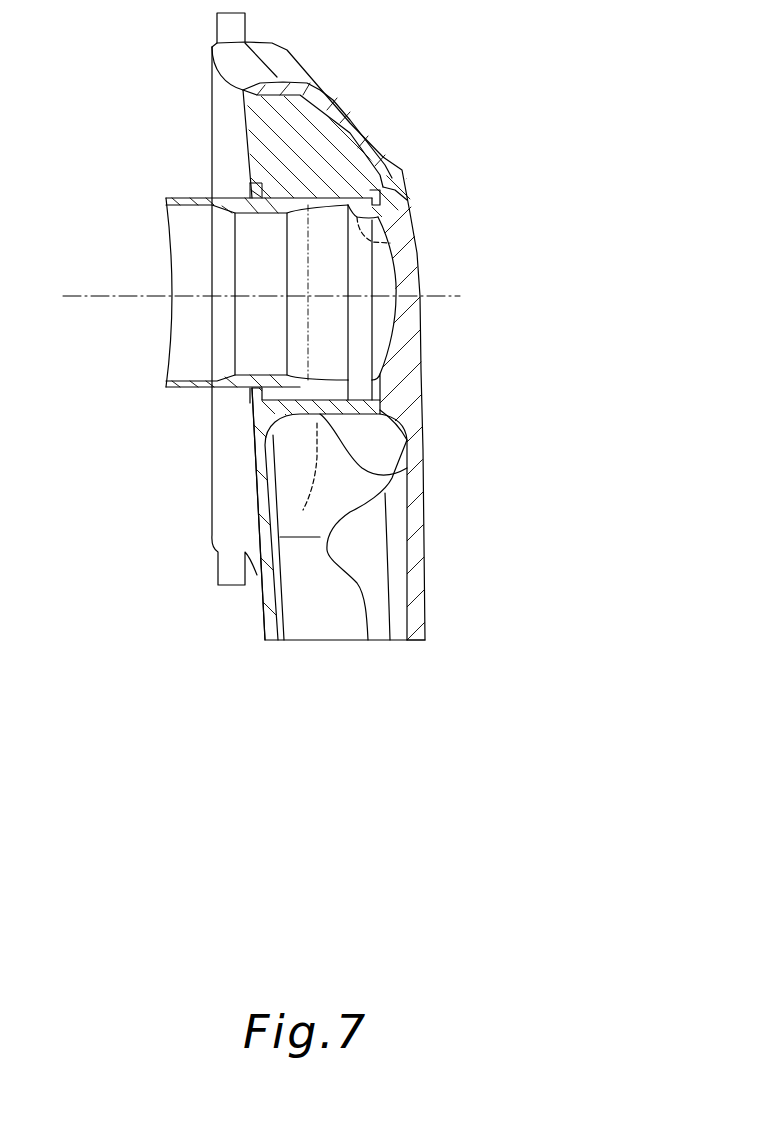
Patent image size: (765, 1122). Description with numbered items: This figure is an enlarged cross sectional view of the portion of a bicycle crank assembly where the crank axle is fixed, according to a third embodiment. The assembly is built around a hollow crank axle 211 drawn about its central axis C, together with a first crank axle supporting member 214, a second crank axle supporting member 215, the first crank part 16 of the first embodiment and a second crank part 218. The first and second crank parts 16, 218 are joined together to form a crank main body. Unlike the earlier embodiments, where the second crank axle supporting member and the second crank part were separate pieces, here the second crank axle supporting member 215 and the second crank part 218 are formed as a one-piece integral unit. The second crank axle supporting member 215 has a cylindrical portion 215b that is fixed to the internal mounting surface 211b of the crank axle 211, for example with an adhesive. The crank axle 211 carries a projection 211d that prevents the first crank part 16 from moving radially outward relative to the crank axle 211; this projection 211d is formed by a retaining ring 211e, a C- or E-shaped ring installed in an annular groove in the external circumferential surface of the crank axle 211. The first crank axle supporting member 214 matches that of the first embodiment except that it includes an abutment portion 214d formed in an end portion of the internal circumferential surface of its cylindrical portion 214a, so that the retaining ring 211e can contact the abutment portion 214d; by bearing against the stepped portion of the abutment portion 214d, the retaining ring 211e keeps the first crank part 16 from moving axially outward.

The central axis C is at (138, 296).
The crank axle 211 is at (185, 190).
The internal mounting surface 211b is at (383, 244).
The projection 211d is at (383, 157).
The retaining ring 211e is at (386, 184).
The first crank axle supporting member 214 is at (317, 423).
The cylindrical portion 214a is at (370, 472).
The abutment portion 214d is at (395, 378).
The second crank axle supporting member 215 is at (405, 212).
The cylindrical portion 215b is at (392, 438).
The second crank part 218 is at (432, 555).
The first crank part 16 is at (238, 608).